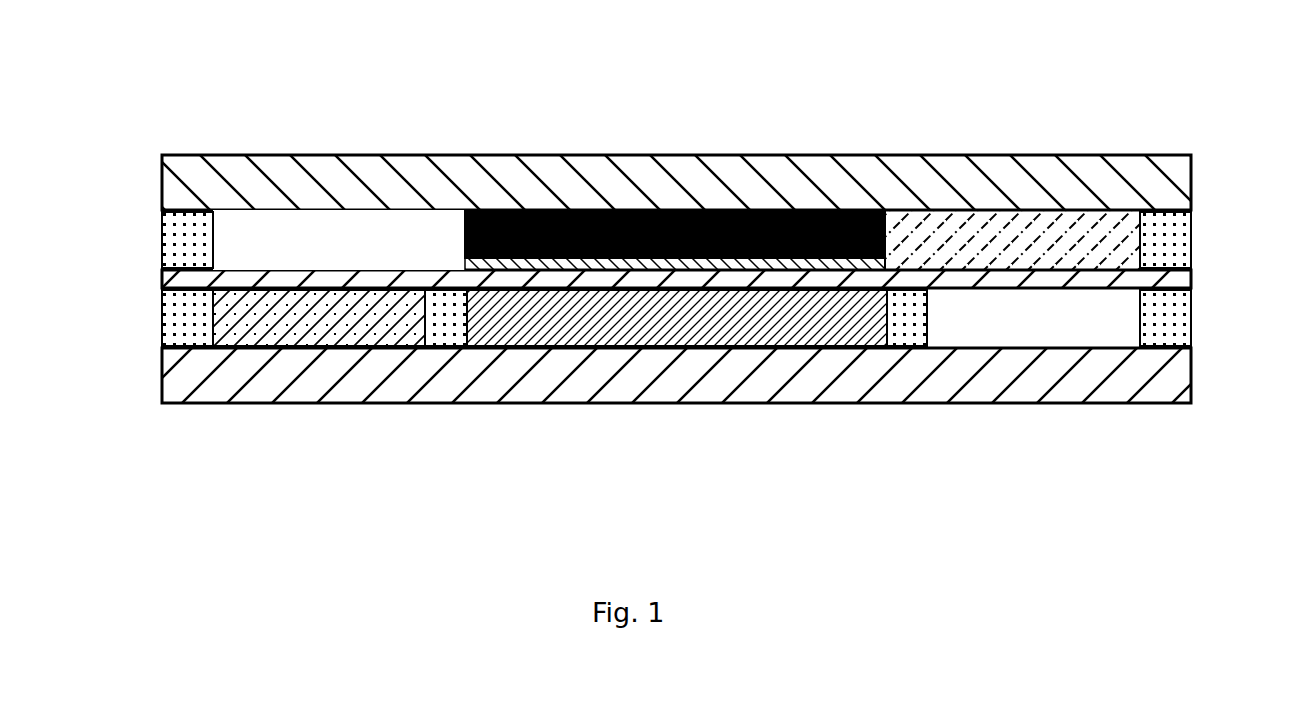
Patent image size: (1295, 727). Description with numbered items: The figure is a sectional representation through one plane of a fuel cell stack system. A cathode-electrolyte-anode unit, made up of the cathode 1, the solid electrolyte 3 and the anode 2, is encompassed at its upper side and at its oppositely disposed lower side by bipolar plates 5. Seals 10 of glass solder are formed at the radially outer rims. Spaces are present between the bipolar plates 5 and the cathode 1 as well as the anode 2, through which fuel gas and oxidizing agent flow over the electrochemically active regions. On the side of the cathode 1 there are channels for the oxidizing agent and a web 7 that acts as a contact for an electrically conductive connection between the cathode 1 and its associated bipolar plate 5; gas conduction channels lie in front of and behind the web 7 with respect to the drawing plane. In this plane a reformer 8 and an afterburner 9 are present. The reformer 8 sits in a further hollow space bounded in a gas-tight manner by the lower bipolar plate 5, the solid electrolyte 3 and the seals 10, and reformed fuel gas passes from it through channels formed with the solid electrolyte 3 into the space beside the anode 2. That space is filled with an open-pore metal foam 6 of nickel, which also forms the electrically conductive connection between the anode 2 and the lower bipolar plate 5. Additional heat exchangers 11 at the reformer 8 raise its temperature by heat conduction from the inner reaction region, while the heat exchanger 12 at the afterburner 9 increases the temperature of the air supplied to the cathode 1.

The cathode 1 is at (747, 262).
The anode 2 is at (803, 288).
The solid electrolyte 3 is at (838, 277).
The bipolar plate 5 is at (210, 183).
The open-pore metal foam 6 is at (675, 325).
The web 7 is at (584, 232).
The reformer 8 is at (320, 318).
The afterburner 9 is at (948, 233).
The seal 10 is at (183, 239).
The heat exchanger 11 is at (330, 233).
The heat exchanger 12 is at (1023, 313).